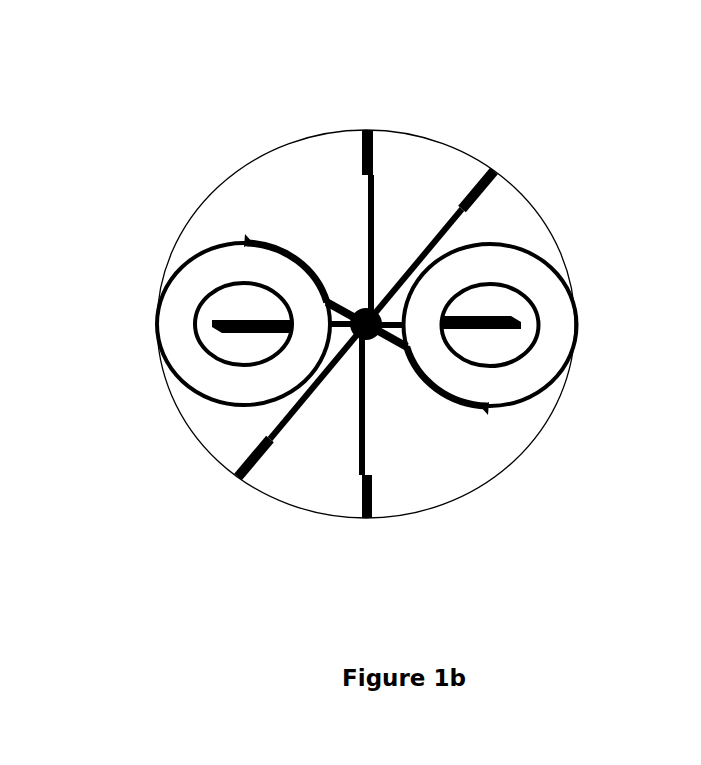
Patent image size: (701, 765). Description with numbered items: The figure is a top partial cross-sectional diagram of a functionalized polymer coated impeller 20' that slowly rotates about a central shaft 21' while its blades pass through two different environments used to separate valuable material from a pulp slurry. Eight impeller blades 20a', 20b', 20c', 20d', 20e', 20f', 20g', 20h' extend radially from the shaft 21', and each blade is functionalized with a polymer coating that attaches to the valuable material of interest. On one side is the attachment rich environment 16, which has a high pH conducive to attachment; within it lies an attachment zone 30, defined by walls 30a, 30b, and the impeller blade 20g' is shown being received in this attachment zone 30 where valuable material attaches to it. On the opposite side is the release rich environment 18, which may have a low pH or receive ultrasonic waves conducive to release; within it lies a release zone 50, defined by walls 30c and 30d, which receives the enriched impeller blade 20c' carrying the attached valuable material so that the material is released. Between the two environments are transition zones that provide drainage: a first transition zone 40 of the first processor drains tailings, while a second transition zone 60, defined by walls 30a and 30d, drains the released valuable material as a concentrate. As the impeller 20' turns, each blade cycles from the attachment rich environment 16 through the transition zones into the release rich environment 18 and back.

The attachment rich environment 16 is at (211, 225).
The release rich environment 18 is at (488, 435).
The first transition zone 40 is at (300, 482).
The second transition zone 60 is at (435, 153).
The attachment zone 30 is at (359, 314).
The release zone 50 is at (406, 445).
The functionalized polymer coated impeller 20' is at (324, 250).
The shaft 21' is at (379, 284).
The impeller blade 20a' is at (218, 332).
The impeller blade 20b' is at (230, 401).
The enriched impeller blade 20c' is at (421, 433).
The impeller blade 20d' is at (492, 380).
The impeller blade 20e' is at (507, 325).
The impeller blade 20f' is at (495, 266).
The impeller blade 20g' is at (308, 150).
The impeller blade 20h' is at (276, 218).
The wall 30a is at (362, 130).
The wall 30b is at (242, 460).
The wall 30c is at (373, 490).
The wall 30d is at (482, 195).